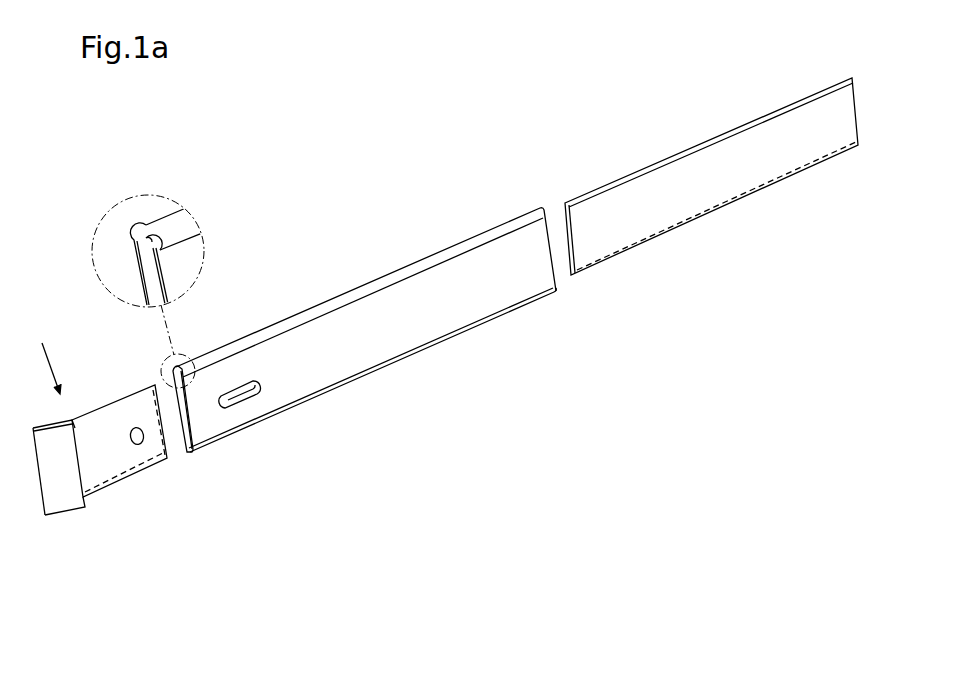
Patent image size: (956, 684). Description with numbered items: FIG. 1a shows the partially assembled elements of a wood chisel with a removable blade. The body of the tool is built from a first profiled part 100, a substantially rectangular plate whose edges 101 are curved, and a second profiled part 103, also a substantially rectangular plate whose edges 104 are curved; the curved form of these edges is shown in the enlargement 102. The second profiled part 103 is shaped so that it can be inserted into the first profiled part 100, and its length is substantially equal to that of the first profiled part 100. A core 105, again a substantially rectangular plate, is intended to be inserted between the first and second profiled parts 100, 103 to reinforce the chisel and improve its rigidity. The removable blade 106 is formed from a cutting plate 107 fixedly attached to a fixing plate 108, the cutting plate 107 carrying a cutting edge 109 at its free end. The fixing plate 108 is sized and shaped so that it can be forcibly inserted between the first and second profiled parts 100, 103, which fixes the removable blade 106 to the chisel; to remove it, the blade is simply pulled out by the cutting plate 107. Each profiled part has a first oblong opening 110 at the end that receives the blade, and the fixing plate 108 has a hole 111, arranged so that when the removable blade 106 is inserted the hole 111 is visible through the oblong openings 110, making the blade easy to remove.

The first profiled part 100 is at (472, 235).
The edges 101 is at (377, 285).
The enlargement 102 is at (153, 193).
The second profiled part 103 is at (372, 347).
The edges 104 is at (136, 246).
The core 105 is at (712, 165).
The removable blade 106 is at (90, 469).
The cutting plate 107 is at (63, 497).
The fixing plate 108 is at (100, 430).
The cutting edge 109 is at (38, 473).
The first oblong opening 110 is at (238, 388).
The hole 111 is at (137, 445).